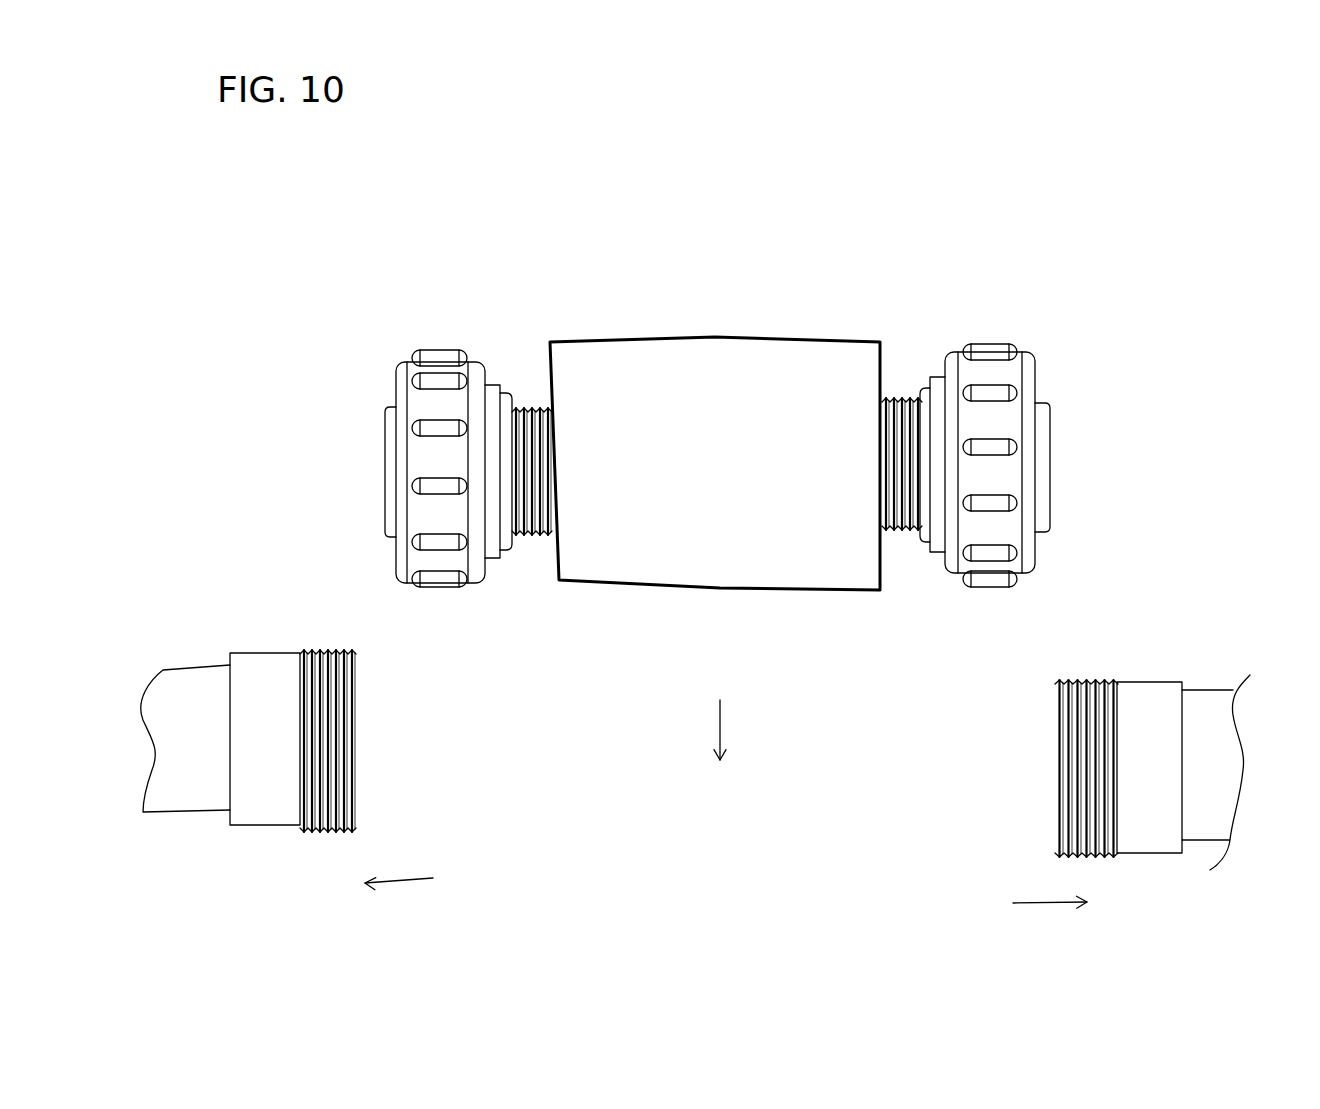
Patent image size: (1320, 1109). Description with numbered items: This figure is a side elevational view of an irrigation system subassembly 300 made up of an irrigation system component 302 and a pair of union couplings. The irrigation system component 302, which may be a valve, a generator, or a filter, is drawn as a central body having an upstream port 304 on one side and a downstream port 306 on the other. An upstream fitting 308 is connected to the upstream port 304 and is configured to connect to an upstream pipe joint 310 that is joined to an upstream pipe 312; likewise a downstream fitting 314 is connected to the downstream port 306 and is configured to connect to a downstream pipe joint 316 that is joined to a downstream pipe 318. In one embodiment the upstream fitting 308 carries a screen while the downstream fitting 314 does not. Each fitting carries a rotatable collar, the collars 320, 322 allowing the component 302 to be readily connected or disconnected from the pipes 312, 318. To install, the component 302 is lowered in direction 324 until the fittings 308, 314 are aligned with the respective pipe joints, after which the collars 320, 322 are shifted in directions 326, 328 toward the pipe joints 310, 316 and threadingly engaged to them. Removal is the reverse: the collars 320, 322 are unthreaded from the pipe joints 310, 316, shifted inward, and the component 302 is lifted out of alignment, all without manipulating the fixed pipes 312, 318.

The irrigation system subassembly 300 is at (1075, 173).
The irrigation system component 302 is at (810, 372).
The upstream port 304 is at (890, 548).
The downstream port 306 is at (538, 546).
The upstream fitting 308 is at (1028, 317).
The upstream pipe joint 310 is at (1113, 657).
The upstream pipe 312 is at (1202, 710).
The downstream fitting 314 is at (450, 327).
The downstream pipe joint 316 is at (292, 633).
The downstream pipe 318 is at (197, 685).
The rotatable collar 320 is at (410, 380).
The rotatable collar 322 is at (1024, 378).
The direction 324 is at (722, 730).
The direction 326 is at (1050, 925).
The direction 328 is at (409, 904).